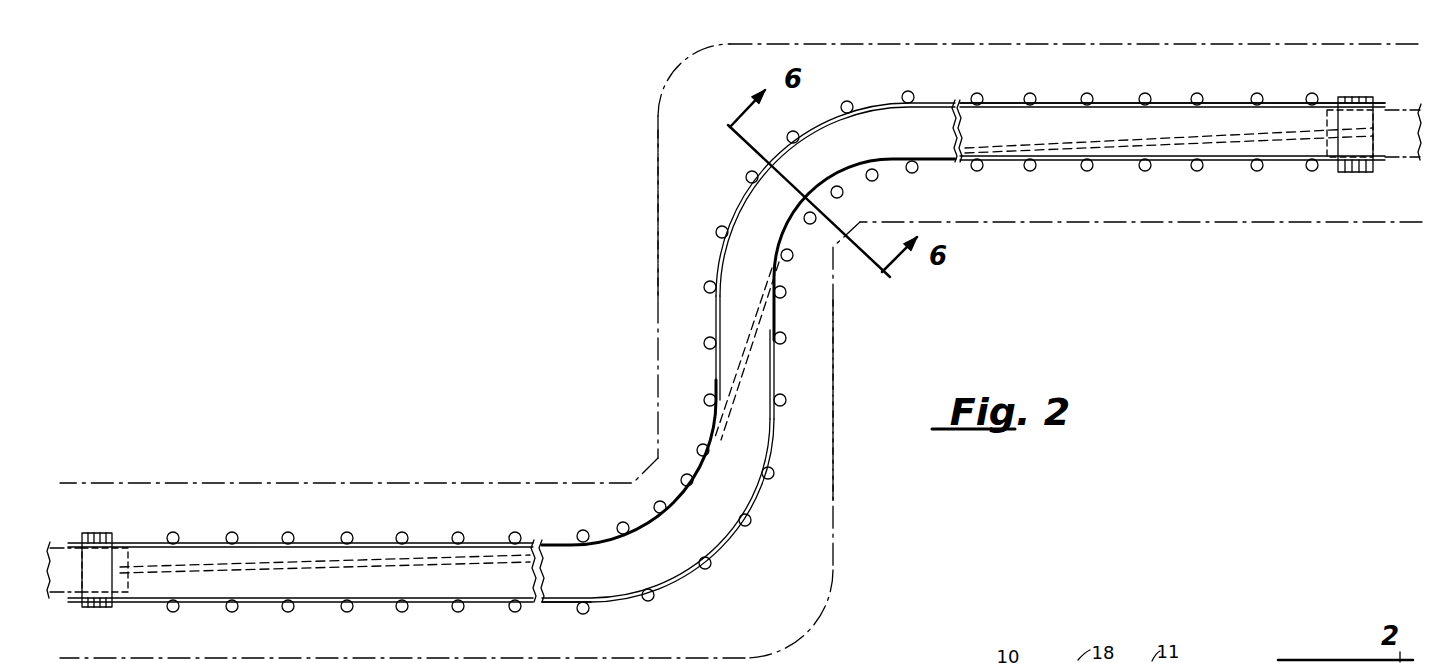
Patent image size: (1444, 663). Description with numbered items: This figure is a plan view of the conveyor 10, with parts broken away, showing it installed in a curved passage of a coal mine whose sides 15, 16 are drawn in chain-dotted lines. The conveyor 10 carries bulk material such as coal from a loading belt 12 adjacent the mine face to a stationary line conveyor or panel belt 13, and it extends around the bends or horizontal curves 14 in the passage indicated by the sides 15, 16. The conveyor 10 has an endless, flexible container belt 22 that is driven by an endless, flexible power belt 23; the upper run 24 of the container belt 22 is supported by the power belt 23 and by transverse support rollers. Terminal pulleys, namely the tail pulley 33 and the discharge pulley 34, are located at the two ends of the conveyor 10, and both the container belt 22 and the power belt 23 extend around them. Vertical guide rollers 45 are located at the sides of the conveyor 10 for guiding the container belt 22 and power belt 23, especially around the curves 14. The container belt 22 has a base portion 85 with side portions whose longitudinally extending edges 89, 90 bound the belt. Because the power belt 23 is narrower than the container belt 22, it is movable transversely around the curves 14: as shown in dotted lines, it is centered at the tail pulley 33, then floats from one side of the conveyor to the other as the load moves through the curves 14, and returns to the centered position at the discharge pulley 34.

The conveyor 10 is at (734, 353).
The loading belt 12 is at (50, 585).
The panel belt 13 is at (1405, 112).
The curves 14 is at (693, 110).
The side 15 is at (658, 150).
The side 16 is at (833, 378).
The container belt 22 is at (843, 140).
The power belt 23 is at (1235, 140).
The upper run 24 is at (1088, 122).
The tail pulley 33 is at (102, 535).
The discharge pulley 34 is at (1355, 95).
The vertical guide rollers 45 is at (1195, 94).
The base portion 85 is at (588, 577).
The edge 89 is at (716, 412).
The edge 90 is at (720, 545).